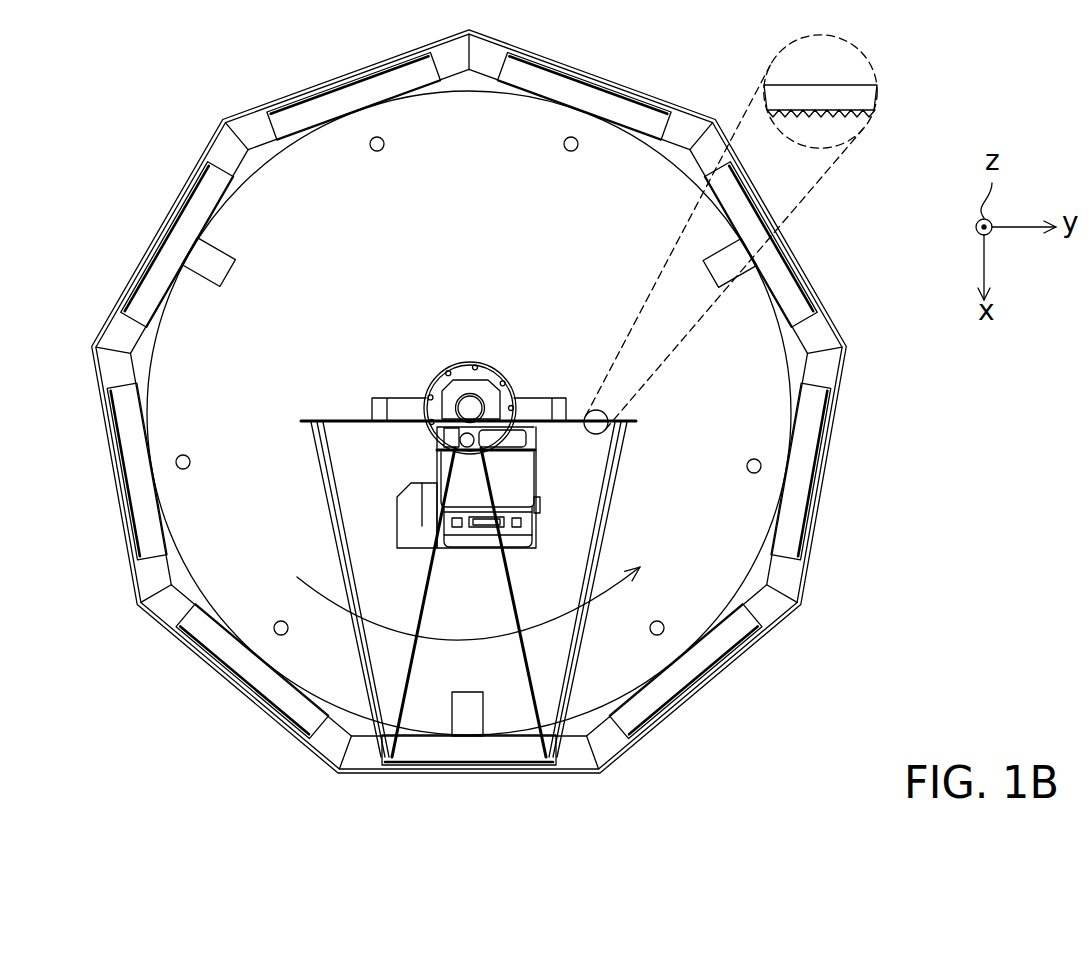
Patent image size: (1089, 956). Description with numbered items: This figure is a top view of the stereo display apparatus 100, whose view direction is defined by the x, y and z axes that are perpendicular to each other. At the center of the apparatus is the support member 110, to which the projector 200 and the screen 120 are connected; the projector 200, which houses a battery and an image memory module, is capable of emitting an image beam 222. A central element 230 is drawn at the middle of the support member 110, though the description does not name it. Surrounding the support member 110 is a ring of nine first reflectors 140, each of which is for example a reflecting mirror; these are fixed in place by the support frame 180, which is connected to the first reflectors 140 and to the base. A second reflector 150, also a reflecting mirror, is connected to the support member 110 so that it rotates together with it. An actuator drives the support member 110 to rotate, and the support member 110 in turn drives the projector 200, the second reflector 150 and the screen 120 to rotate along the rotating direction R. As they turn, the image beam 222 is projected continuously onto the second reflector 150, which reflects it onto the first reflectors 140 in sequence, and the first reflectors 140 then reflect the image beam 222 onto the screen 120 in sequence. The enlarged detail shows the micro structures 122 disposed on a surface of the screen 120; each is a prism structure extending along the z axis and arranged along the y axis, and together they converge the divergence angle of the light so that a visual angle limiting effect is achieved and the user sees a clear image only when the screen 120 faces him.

The stereo display apparatus 100 is at (843, 781).
The support member 110 is at (455, 356).
The screen 120 is at (601, 413).
The micro structures 122 is at (848, 110).
The first reflectors 140 is at (796, 481).
The second reflector 150 is at (447, 394).
The support frame 180 is at (770, 599).
The projector 200 is at (504, 430).
The image beam 222 is at (414, 582).
The rotation shaft 230 is at (474, 394).
The rotating direction R is at (631, 590).